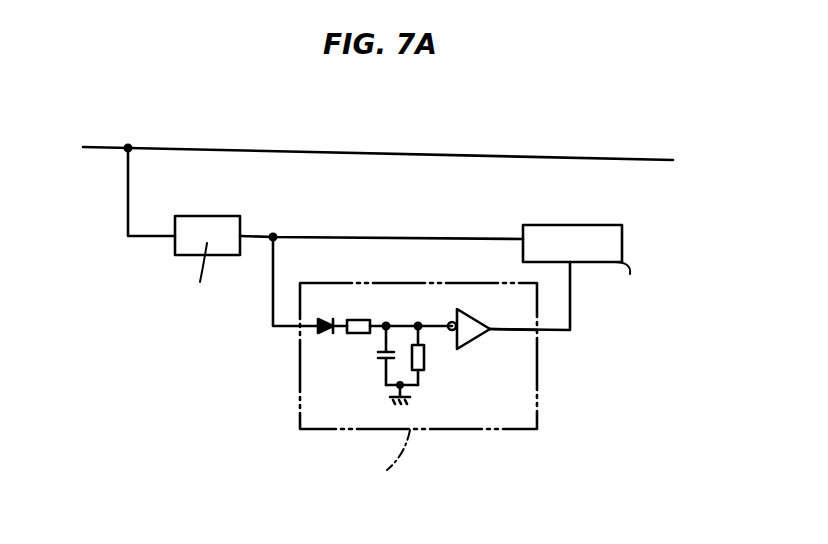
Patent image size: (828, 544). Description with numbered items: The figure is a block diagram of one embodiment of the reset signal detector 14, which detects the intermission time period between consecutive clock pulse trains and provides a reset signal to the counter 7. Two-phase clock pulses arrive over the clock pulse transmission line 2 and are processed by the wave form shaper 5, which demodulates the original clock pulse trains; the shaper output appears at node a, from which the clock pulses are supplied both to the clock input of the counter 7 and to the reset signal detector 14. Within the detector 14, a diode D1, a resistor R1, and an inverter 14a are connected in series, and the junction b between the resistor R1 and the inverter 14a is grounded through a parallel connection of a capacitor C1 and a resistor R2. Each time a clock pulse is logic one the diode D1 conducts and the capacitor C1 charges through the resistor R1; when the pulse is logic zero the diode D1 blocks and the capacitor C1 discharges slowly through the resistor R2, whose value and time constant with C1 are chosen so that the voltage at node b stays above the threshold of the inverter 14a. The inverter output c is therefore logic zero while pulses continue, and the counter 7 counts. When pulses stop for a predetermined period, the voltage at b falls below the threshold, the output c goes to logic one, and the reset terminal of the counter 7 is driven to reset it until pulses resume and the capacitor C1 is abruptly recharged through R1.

The clock pulse transmission line 2 is at (411, 150).
The wave form shaper 5 is at (203, 215).
The node a (wave shaper output) a is at (257, 233).
The counter 7 is at (574, 225).
The reset signal detector 14 is at (537, 392).
The diode D1 is at (325, 318).
The resistor R1 is at (357, 318).
The node b is at (400, 322).
The capacitor C1 is at (377, 359).
The resistor R2 is at (425, 357).
The inverter 14a is at (471, 337).
The node c (inverter output) c is at (507, 327).